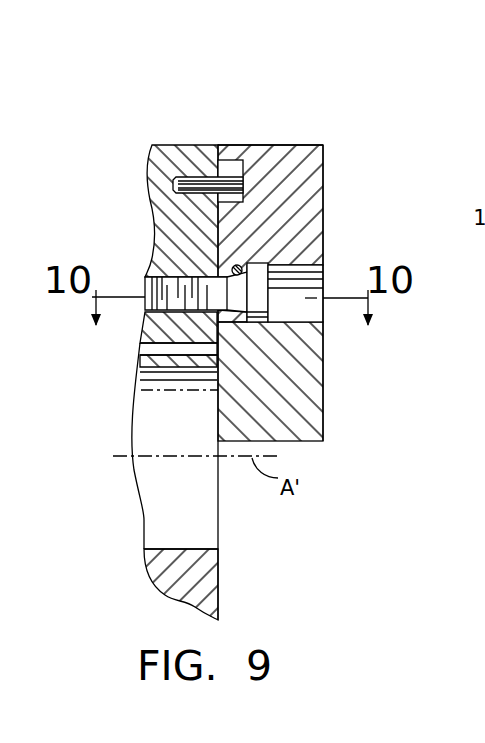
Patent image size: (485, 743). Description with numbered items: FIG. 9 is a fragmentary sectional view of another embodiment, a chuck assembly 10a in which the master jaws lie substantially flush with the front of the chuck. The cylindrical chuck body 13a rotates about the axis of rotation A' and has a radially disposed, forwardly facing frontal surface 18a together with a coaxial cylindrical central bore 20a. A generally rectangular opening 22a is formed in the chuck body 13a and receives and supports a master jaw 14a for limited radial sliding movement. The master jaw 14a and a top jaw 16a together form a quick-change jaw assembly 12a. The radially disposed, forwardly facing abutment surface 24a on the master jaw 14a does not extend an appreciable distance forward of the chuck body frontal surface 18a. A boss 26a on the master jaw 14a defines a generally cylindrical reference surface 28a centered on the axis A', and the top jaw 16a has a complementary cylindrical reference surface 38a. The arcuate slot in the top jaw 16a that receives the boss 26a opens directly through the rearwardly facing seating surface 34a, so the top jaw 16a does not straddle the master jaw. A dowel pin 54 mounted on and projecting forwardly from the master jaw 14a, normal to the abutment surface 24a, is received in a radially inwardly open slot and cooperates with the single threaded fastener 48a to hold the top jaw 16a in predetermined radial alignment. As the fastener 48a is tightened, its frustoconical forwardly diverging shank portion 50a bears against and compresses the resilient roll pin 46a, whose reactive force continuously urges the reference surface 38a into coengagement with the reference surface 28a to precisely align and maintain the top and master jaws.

The chuck assembly 10a is at (266, 119).
The jaw assembly 12a is at (255, 94).
The chuck body 13a is at (172, 584).
The master jaw 14a is at (124, 190).
The top jaw 16a is at (339, 194).
The chuck body frontal surface 18a is at (220, 570).
The central bore 20a is at (183, 549).
The opening 22a is at (148, 349).
The abutment surface 24a is at (286, 145).
The boss 26a is at (250, 192).
The reference surface 28a is at (216, 238).
The seating surface 34a is at (222, 410).
The reference surface 38a is at (250, 218).
The roll pin 46a is at (230, 268).
The fastener 48a is at (262, 253).
The shank portion 50a is at (238, 300).
The dowel pin 54 is at (163, 145).